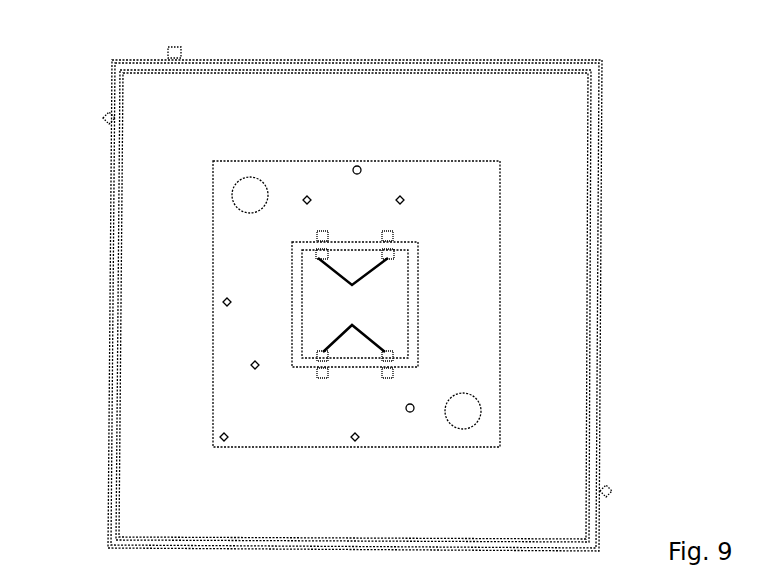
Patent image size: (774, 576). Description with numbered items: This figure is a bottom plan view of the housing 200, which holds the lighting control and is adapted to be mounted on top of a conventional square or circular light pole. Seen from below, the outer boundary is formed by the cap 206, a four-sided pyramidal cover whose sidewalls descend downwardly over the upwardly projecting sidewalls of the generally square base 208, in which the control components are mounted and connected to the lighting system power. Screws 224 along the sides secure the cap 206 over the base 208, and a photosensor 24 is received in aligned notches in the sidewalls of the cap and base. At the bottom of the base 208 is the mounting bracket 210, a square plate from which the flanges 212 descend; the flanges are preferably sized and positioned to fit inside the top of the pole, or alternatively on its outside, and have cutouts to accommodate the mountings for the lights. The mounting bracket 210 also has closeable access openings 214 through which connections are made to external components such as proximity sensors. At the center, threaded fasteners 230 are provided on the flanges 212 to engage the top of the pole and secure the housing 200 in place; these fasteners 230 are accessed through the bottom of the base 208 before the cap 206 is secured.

The housing 200 is at (625, 290).
The cap 206 is at (598, 185).
The base 208 is at (570, 254).
The mounting bracket 210 is at (476, 336).
The flanges 212 is at (418, 277).
The access openings 214 is at (232, 195).
The screws 224 is at (102, 118).
The photosensor 24 is at (175, 58).
The threaded fasteners 230 is at (355, 304).